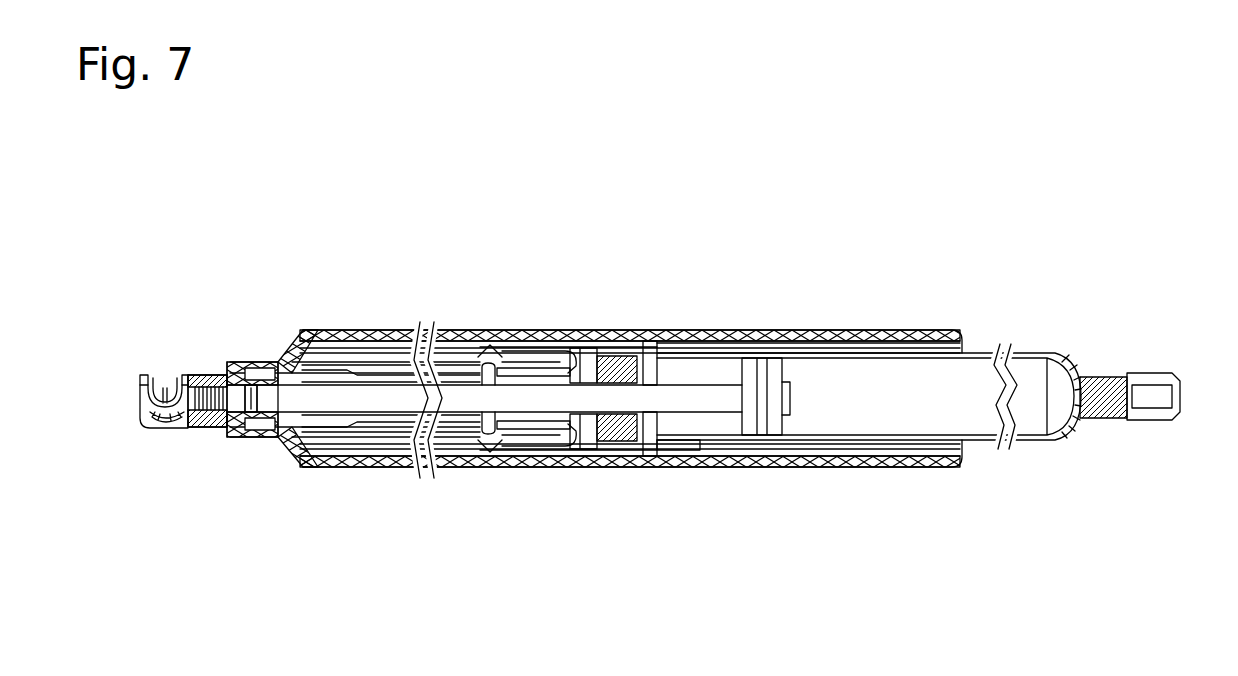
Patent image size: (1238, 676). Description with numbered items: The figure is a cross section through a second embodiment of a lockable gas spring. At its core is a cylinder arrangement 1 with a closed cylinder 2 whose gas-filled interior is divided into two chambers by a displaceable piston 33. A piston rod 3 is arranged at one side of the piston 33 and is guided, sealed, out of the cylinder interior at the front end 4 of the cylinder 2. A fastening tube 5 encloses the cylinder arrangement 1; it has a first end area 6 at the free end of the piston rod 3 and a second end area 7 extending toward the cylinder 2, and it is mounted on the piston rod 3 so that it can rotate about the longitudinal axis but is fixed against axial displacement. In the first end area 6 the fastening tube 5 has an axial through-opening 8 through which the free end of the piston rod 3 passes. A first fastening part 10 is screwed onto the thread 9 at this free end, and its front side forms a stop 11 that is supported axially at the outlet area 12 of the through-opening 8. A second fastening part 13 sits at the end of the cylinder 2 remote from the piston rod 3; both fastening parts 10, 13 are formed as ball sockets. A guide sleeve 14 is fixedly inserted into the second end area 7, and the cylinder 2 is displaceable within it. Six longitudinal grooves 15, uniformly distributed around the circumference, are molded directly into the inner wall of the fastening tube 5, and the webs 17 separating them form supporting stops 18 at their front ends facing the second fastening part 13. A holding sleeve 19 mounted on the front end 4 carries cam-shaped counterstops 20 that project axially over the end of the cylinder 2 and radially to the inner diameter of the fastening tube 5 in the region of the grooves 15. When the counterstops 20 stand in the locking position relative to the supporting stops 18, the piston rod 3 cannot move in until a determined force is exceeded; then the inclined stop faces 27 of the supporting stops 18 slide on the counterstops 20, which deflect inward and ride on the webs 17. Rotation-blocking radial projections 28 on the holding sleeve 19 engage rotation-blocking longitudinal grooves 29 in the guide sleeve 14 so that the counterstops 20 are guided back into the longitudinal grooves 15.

The cylinder arrangement 1 is at (1036, 335).
The cylinder 2 is at (1020, 445).
The piston rod 3 is at (367, 335).
The front end 4 is at (601, 455).
The fastening tube 5 is at (648, 445).
The first end area 6 is at (273, 437).
The second end area 7 is at (937, 465).
The axial through-opening 8 is at (276, 332).
The thread 9 is at (198, 427).
The first fastening part 10 is at (142, 427).
The stop 11 is at (262, 335).
The outlet area 12 is at (230, 425).
The second fastening part 13 is at (1178, 420).
The guide sleeve 14 is at (884, 338).
The longitudinal grooves 15 is at (330, 335).
The webs 17 is at (466, 335).
The supporting stops 18 is at (486, 335).
The holding sleeve 19 is at (604, 338).
The counterstops 20 is at (506, 335).
The stop faces 27 is at (488, 335).
The rotation-blocking radial projections 28 is at (633, 450).
The rotation-blocking longitudinal grooves 29 is at (762, 338).
The piston 33 is at (776, 428).